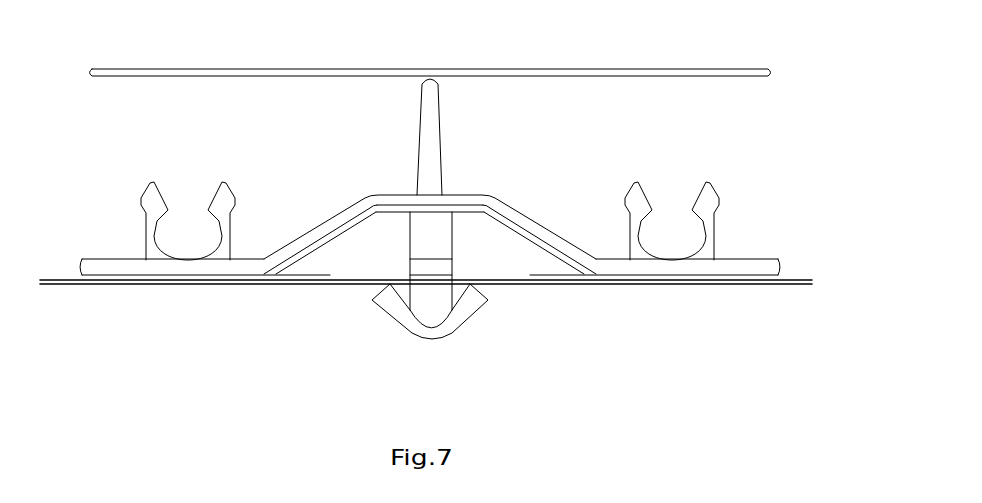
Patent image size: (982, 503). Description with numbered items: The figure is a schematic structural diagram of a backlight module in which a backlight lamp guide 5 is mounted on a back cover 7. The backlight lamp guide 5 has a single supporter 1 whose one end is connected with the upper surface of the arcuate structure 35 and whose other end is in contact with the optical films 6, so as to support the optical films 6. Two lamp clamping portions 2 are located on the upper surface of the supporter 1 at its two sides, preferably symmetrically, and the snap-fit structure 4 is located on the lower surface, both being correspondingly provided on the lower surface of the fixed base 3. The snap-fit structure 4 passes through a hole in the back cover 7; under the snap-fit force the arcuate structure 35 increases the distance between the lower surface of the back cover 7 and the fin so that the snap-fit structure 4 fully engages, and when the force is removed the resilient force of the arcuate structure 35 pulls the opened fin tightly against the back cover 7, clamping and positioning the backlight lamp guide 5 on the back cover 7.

The supporter 1 is at (428, 112).
The lamp clamping portion 2 is at (710, 216).
The fixed base 3 is at (103, 257).
The arcuate structure 35 is at (360, 208).
The snap-fit structure 4 is at (453, 318).
The backlight lamp guide 5 is at (547, 148).
The optical films 6 is at (748, 72).
The back cover 7 is at (298, 284).